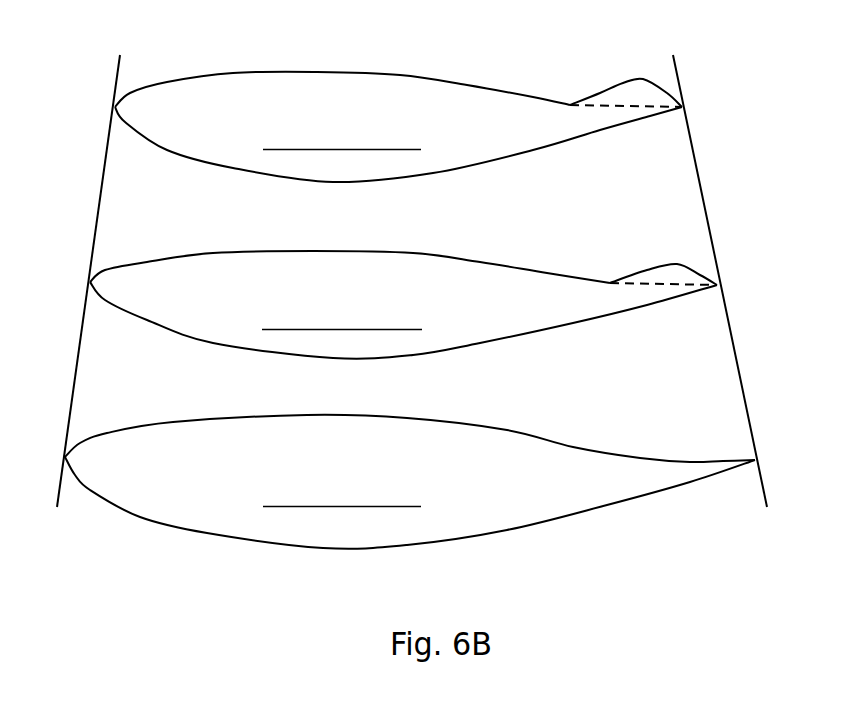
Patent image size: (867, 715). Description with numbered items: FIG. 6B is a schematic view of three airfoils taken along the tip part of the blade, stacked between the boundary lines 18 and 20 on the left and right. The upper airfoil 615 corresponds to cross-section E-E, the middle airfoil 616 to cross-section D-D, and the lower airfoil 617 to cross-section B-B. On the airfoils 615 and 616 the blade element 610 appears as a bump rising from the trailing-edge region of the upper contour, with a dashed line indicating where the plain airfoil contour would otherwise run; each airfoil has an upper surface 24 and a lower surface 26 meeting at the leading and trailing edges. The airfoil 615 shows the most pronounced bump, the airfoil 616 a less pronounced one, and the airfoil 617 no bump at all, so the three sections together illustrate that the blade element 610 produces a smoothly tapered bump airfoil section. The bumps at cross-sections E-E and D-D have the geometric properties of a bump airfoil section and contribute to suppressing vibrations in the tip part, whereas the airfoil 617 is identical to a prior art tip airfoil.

The inner boundary line (hub side) 18 is at (74, 370).
The outer boundary line (tip side) 20 is at (740, 372).
The suction side of airfoil 24 is at (527, 94).
The pressure side of airfoil 26 is at (535, 151).
The blade element 610 is at (637, 90).
The airfoil at cross-section E-E 615 is at (320, 124).
The airfoil at cross-section D-D 616 is at (320, 304).
The airfoil at cross-section B-B 617 is at (320, 482).